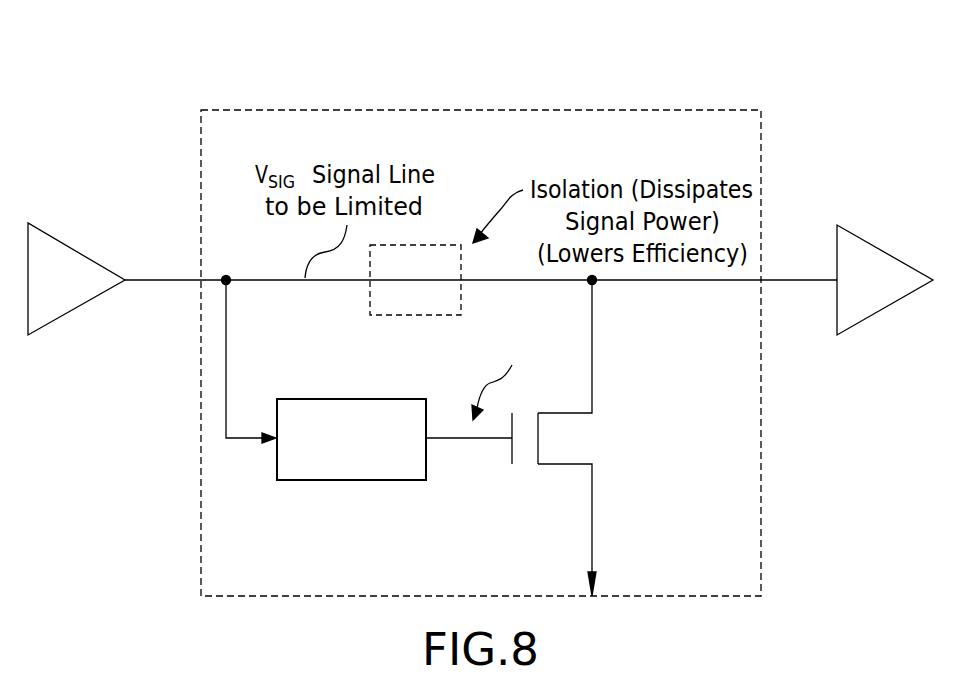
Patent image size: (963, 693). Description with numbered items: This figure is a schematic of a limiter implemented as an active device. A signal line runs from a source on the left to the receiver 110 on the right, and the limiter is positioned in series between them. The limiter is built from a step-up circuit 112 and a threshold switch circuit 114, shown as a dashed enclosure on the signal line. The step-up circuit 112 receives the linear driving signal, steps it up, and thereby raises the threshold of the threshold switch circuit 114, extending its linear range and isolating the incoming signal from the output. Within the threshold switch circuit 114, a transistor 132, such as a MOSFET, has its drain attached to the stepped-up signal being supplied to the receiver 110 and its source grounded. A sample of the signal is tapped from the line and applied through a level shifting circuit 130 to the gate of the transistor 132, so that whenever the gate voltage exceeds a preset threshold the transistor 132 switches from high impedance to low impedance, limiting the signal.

The receiver 110 is at (883, 312).
The step-up circuit 112 is at (78, 307).
The threshold switch circuit 114 is at (480, 110).
The level shifting circuit 130 is at (350, 399).
The transistor 132 is at (546, 489).